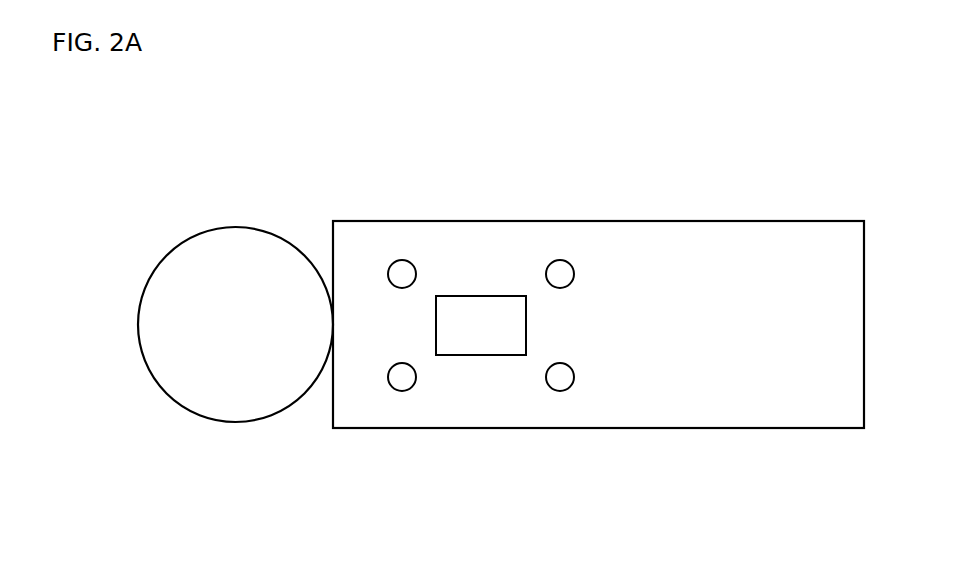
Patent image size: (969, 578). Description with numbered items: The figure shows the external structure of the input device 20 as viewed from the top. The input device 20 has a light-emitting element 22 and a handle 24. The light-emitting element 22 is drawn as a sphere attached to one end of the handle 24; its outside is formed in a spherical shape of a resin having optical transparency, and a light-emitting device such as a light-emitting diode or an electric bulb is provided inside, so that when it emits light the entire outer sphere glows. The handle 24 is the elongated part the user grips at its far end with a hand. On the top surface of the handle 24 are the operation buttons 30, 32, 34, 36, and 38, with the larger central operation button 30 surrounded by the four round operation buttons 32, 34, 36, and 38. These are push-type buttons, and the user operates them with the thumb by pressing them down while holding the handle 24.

The input device 20 is at (490, 552).
The light-emitting element 22 is at (235, 227).
The handle 24 is at (805, 240).
The operation button 30 is at (481, 305).
The operation button 32 is at (402, 262).
The operation button 34 is at (560, 262).
The operation button 36 is at (402, 384).
The operation button 38 is at (560, 384).